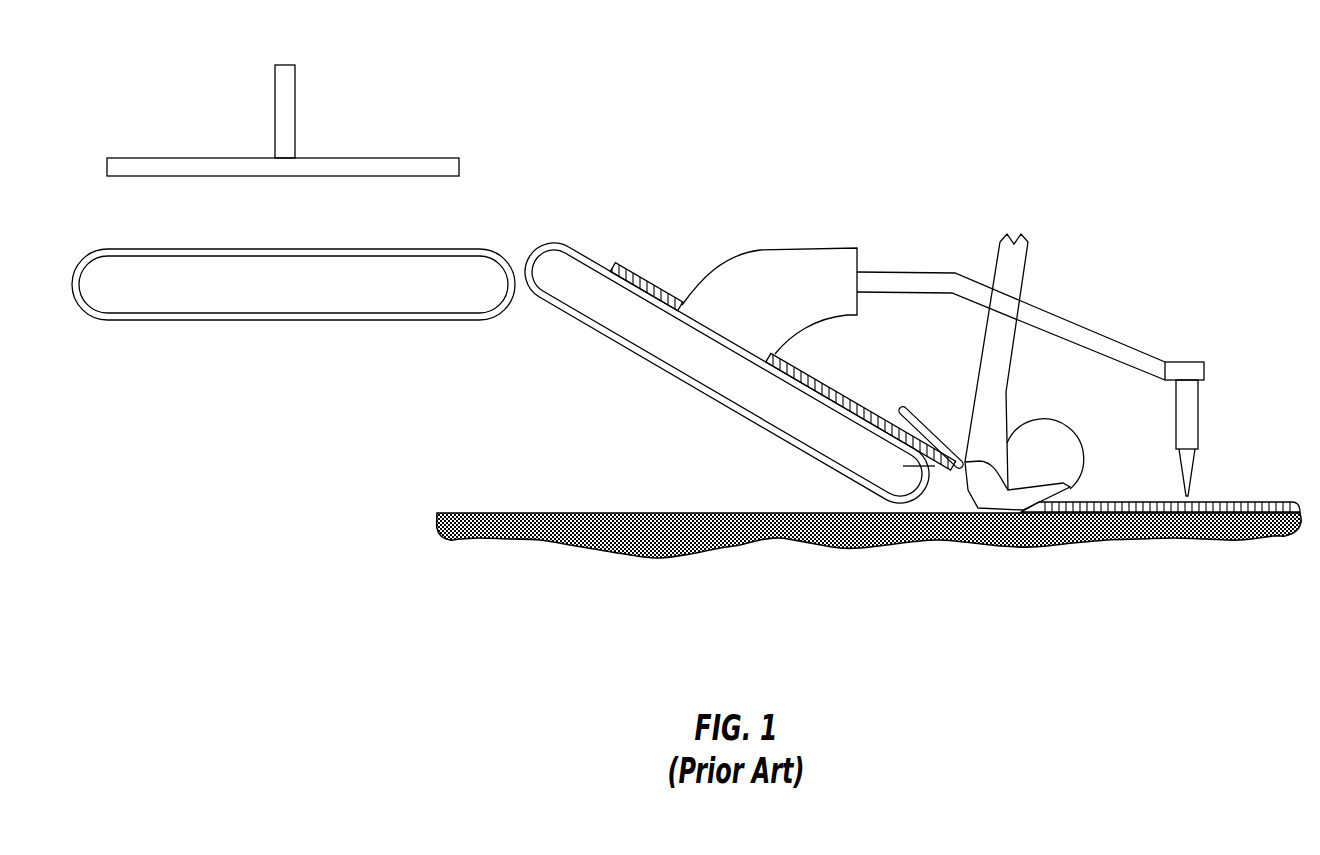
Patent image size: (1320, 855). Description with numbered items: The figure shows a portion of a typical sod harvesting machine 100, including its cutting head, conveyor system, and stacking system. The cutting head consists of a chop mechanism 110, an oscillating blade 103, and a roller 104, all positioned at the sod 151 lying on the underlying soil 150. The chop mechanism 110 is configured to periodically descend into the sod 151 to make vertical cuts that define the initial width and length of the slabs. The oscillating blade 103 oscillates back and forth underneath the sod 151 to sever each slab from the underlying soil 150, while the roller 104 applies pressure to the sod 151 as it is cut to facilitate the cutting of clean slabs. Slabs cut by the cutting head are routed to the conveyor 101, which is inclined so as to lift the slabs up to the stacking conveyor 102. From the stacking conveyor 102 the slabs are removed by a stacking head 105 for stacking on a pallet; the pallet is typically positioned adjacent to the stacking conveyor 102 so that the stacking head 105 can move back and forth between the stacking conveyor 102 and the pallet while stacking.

The sod harvesting machine 100 is at (718, 48).
The conveyor 101 is at (607, 337).
The stacking conveyor 102 is at (143, 320).
The oscillating blade 103 is at (963, 540).
The roller 104 is at (1073, 433).
The stacking head 105 is at (273, 102).
The chop mechanism 110 is at (1199, 420).
The soil 150 is at (437, 530).
The sod 151 is at (1235, 540).